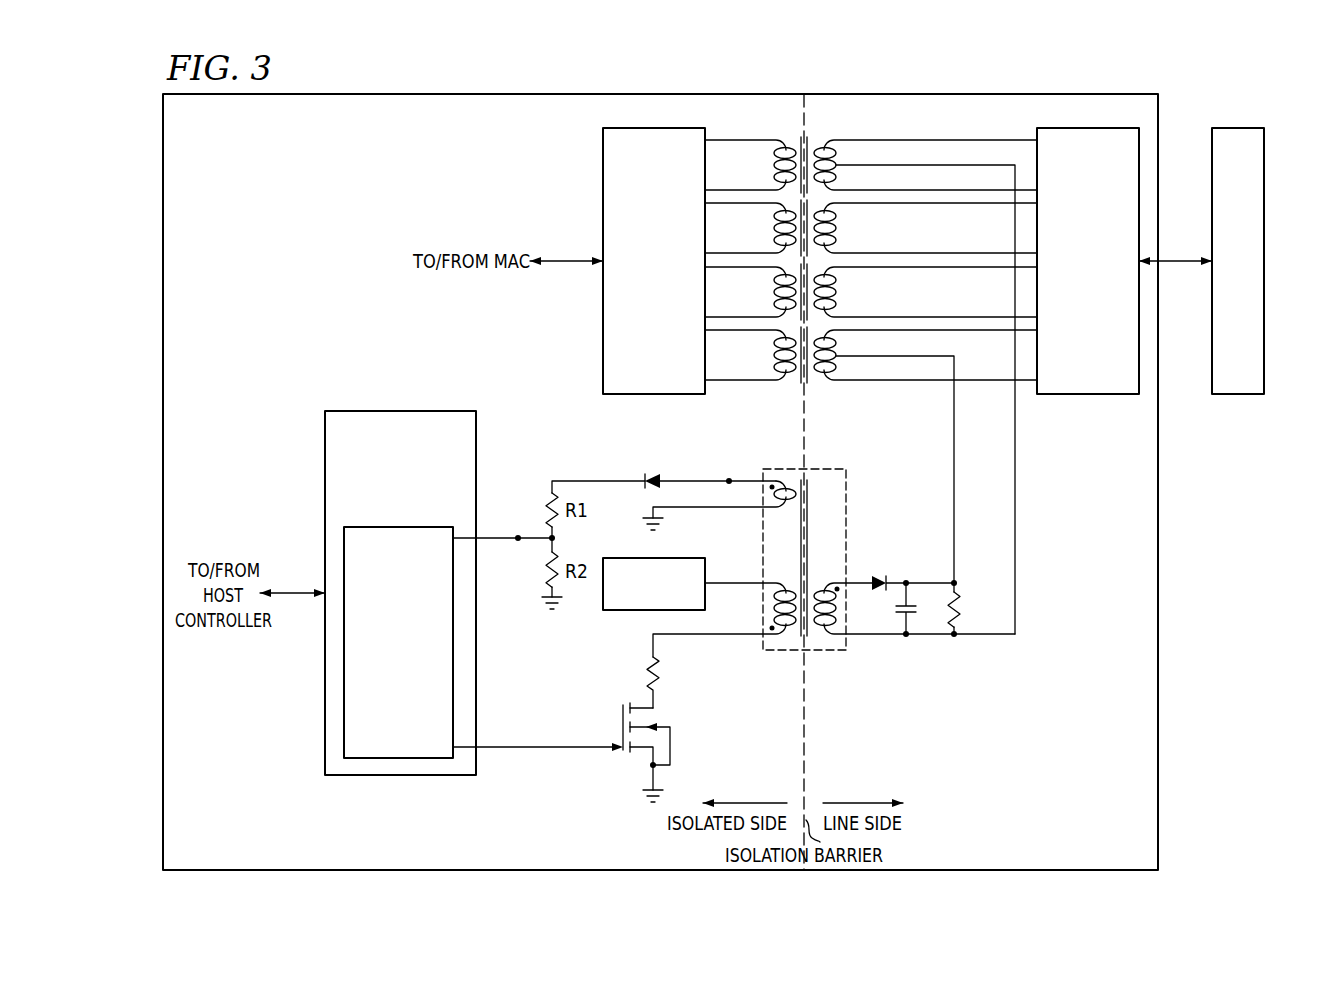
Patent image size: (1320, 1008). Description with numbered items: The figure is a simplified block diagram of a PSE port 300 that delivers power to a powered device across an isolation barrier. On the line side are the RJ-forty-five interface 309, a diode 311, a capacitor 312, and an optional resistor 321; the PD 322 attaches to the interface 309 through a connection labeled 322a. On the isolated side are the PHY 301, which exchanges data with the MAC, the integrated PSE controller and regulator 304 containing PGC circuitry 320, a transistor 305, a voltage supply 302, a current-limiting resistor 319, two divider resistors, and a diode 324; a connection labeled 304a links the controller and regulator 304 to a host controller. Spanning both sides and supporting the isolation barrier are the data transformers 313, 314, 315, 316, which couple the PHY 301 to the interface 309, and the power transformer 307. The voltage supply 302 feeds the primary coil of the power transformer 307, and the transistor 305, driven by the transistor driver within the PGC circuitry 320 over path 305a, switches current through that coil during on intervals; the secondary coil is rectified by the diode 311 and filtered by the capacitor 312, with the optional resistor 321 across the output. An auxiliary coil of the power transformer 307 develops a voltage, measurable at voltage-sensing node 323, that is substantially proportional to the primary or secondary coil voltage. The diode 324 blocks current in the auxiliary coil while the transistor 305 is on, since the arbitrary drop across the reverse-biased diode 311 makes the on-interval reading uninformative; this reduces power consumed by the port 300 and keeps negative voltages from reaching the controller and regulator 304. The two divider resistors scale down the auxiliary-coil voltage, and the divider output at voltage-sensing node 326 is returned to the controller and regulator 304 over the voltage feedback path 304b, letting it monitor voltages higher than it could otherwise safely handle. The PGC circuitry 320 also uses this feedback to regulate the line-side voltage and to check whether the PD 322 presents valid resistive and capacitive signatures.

The PSE port 300 is at (1158, 830).
The PHY 301 is at (655, 128).
The voltage supply 302 is at (688, 558).
The integrated PSE controller and regulator 304 is at (428, 411).
The host controller interface 304a is at (300, 590).
The voltage feedback path 304b is at (504, 541).
The transistor 305 is at (622, 712).
The path 305a is at (505, 745).
The power transformer 307 is at (822, 469).
The RJ45 interface 309 is at (1087, 128).
The diode 311 is at (878, 578).
The capacitor 312 is at (897, 609).
The transformer 313 is at (775, 163).
The transformer 314 is at (775, 226).
The transformer 315 is at (775, 290).
The transformer 316 is at (775, 353).
The current-limiting resistor 319 is at (660, 668).
The PGC circuitry 320 is at (405, 527).
The optional resistor 321 is at (962, 608).
The PD 322 is at (1225, 128).
The powered device connection 322a is at (1188, 258).
The voltage-sensing node 323 is at (729, 478).
The diode 324 is at (648, 478).
The voltage-sensing node 326 is at (520, 535).